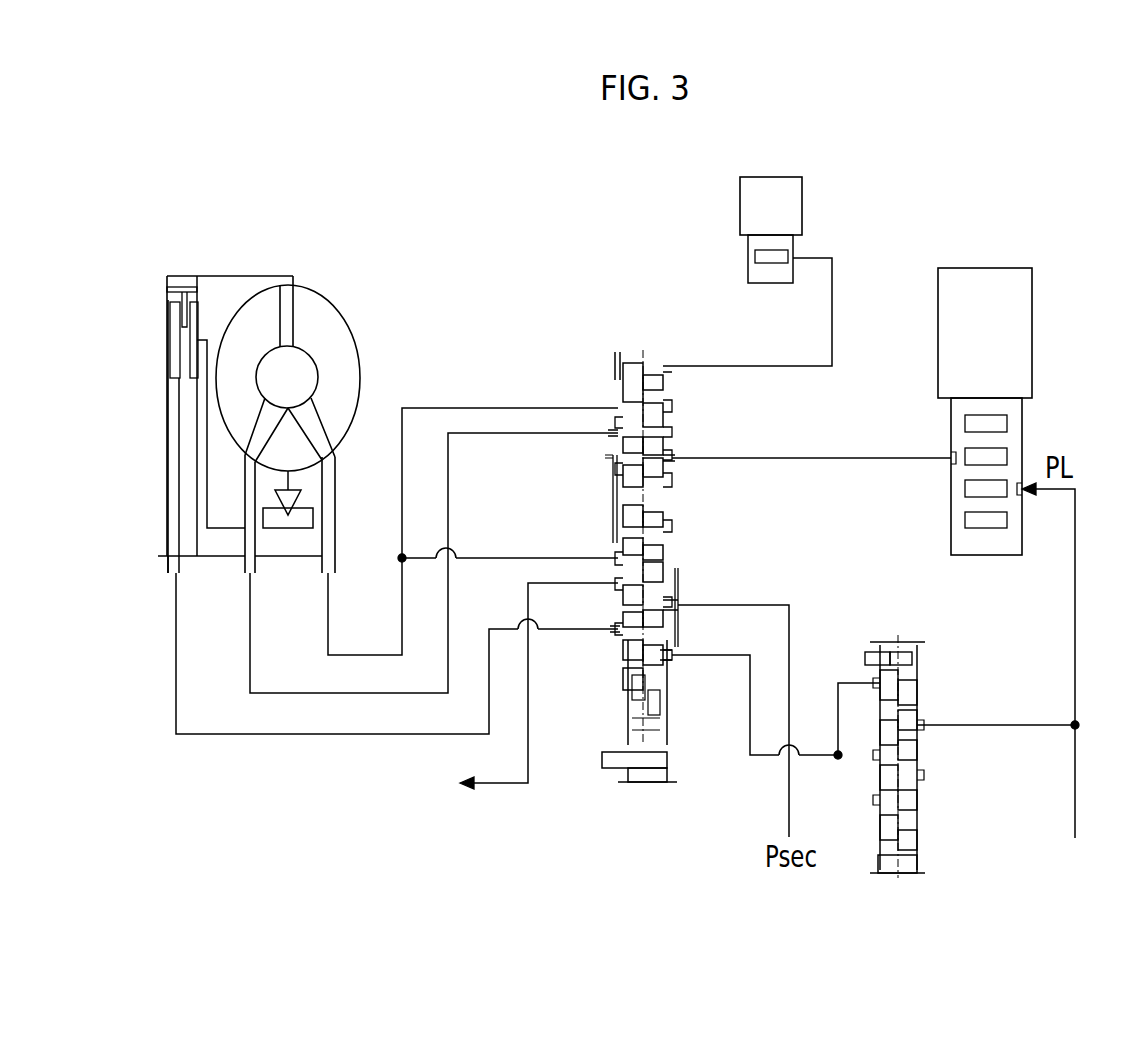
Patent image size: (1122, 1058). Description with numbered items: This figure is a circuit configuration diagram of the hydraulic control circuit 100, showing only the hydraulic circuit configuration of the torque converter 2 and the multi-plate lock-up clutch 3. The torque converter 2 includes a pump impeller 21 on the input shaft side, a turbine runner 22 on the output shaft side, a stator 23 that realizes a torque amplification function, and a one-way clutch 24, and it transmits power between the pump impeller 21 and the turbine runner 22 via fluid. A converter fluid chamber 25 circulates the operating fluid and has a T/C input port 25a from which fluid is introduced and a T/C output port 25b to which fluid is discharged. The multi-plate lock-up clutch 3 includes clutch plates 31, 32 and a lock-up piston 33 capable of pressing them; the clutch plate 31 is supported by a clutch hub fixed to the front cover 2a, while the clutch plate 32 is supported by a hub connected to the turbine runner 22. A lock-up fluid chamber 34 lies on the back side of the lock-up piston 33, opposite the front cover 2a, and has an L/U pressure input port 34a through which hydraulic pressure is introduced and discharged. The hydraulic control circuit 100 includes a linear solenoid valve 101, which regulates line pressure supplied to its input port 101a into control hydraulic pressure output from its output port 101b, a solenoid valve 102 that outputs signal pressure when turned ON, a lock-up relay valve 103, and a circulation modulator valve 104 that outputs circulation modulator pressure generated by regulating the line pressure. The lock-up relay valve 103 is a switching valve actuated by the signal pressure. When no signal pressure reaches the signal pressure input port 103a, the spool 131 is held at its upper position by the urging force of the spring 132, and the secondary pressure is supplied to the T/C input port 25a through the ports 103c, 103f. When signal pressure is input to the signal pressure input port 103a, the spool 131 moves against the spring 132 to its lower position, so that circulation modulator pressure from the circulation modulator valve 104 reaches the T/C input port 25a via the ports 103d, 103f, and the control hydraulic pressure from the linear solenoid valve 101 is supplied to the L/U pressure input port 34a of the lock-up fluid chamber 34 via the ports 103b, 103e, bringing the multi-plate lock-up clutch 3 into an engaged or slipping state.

The torque converter 2 is at (249, 408).
The front cover 2a is at (168, 455).
The multi-plate lock-up clutch 3 is at (166, 385).
The pump impeller 21 is at (333, 318).
The turbine runner 22 is at (268, 298).
The stator 23 is at (293, 443).
The one-way clutch 24 is at (300, 500).
The converter fluid chamber 25 is at (227, 288).
The T/C input port 25a is at (168, 563).
The T/C output port 25b is at (335, 565).
The clutch plate 31 is at (168, 297).
The clutch plate 32 is at (193, 353).
The lock-up piston 33 is at (197, 425).
The lock-up fluid chamber 34 is at (220, 543).
The L/U pressure input port 34a is at (257, 565).
The hydraulic control circuit 100 is at (650, 535).
The linear solenoid valve (SLU) 101 is at (964, 397).
The input port 101a is at (1022, 490).
The output port 101b is at (951, 458).
The solenoid valve (SL) 102 is at (806, 218).
The lock-up relay valve 103 is at (650, 560).
The signal pressure input port 103a is at (673, 363).
The port 103b is at (676, 455).
The port 103c is at (678, 605).
The port 103d is at (660, 667).
The port 103e is at (615, 437).
The port 103f is at (620, 632).
The circulation modulator valve 104 is at (929, 677).
The spool 131 is at (657, 690).
The spring 132 is at (627, 720).